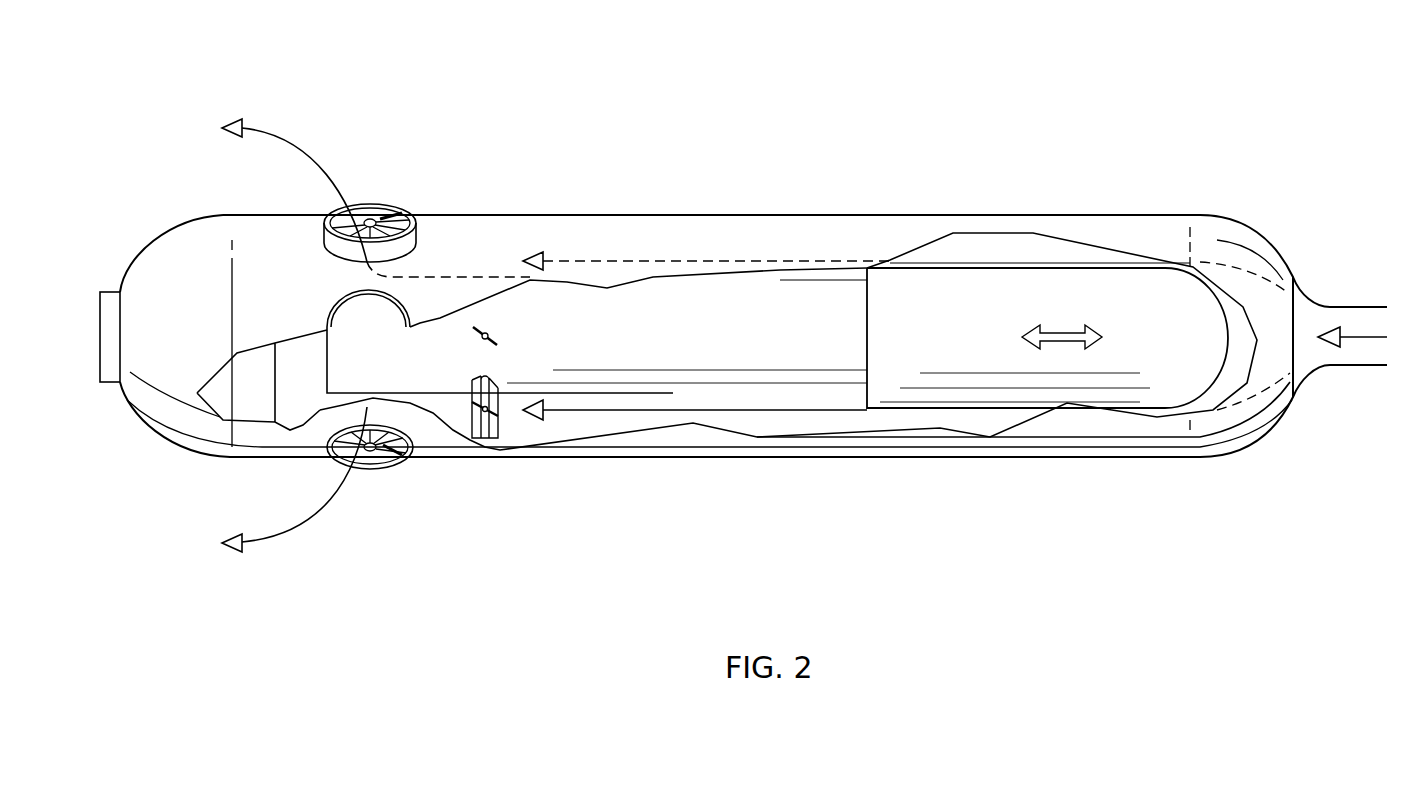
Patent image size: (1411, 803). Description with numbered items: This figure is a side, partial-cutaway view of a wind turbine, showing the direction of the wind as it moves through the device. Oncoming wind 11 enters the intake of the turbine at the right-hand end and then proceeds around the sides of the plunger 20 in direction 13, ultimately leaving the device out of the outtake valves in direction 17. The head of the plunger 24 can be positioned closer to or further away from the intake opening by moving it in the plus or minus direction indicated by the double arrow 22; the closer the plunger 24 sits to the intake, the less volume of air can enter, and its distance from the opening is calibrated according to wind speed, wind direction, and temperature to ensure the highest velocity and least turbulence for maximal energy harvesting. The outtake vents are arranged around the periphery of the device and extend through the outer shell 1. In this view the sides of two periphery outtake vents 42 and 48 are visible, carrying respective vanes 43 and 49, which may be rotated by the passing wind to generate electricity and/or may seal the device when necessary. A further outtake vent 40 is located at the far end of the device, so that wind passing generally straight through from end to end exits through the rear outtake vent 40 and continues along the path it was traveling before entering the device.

The outer shell 1 is at (183, 253).
The oncoming wind 11 is at (1333, 330).
The direction 13 is at (553, 262).
The direction 17 is at (265, 127).
The plunger 20 is at (680, 317).
The double arrow 22 is at (1060, 333).
The head of the plunger 24 is at (1166, 300).
The outtake vent 40 is at (113, 365).
The periphery outtake vent 42 is at (365, 207).
The vane 43 is at (382, 217).
The periphery outtake vent 48 is at (375, 465).
The vane 49 is at (390, 443).